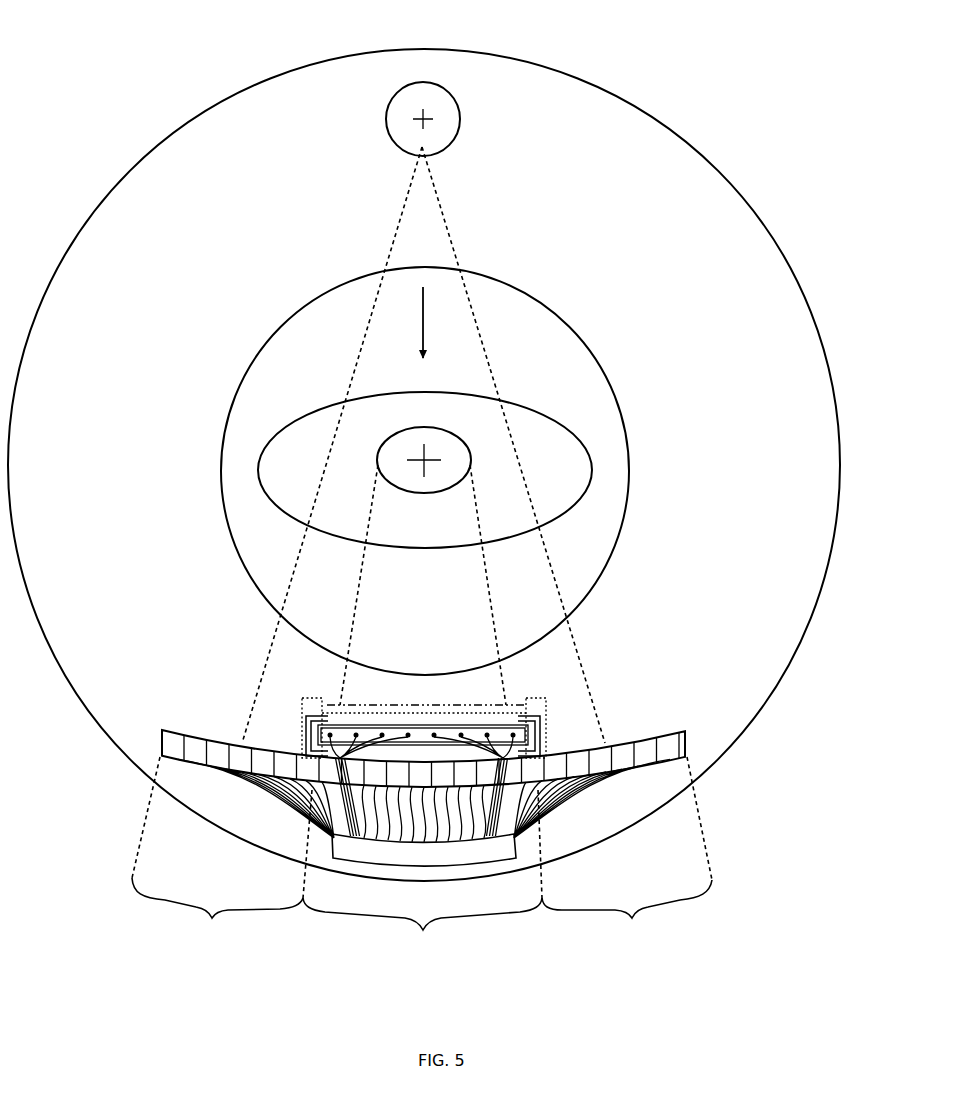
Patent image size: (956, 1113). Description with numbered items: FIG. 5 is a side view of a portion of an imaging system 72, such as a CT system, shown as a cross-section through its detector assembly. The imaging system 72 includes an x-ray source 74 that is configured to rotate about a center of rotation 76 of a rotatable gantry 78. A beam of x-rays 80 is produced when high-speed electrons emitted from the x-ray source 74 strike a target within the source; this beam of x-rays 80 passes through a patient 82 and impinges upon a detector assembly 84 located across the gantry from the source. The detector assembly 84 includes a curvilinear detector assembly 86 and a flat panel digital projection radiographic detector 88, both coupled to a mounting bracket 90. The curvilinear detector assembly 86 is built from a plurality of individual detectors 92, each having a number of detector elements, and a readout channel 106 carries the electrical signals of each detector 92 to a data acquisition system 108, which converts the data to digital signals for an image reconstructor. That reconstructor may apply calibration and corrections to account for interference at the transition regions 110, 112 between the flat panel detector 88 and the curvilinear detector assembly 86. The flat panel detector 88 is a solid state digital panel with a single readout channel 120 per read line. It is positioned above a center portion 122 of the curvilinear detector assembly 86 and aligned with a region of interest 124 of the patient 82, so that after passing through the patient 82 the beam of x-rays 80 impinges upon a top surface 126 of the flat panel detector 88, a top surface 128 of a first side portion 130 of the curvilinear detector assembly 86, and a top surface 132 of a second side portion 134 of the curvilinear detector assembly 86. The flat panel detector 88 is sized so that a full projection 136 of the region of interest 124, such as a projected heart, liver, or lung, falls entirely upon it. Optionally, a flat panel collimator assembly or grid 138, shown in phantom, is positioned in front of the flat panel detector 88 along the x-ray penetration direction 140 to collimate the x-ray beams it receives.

The imaging system 72 is at (84, 80).
The x-ray source 74 is at (456, 137).
The center of rotation 76 is at (411, 472).
The rotatable gantry 78 is at (636, 103).
The beam of x-rays 80 is at (450, 232).
The patient 82 is at (510, 403).
The detector assembly 84 is at (240, 706).
The curvilinear detector assembly 86 is at (151, 745).
The flat panel digital projection radiographic detector 88 is at (475, 726).
The mounting bracket 90 is at (306, 728).
The individual detectors 92 is at (203, 742).
The readout channel 106 is at (236, 792).
The data acquisition system 108 is at (480, 860).
The transition region 110 is at (322, 698).
The transition region 112 is at (546, 698).
The readout channel 120 is at (440, 796).
The center portion 122 is at (422, 926).
The region of interest 124 is at (432, 428).
The top surface 126 is at (347, 721).
The top surface 128 is at (252, 744).
The first side portion 130 is at (222, 850).
The top surface 132 is at (614, 739).
The second side portion 134 is at (625, 847).
The full projection 136 is at (487, 578).
The flat panel collimator assembly or grid 138 is at (394, 704).
The x-ray penetration direction 140 is at (426, 312).